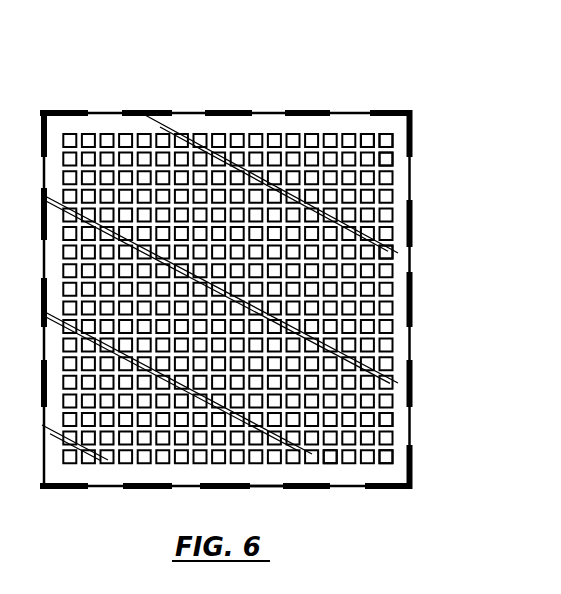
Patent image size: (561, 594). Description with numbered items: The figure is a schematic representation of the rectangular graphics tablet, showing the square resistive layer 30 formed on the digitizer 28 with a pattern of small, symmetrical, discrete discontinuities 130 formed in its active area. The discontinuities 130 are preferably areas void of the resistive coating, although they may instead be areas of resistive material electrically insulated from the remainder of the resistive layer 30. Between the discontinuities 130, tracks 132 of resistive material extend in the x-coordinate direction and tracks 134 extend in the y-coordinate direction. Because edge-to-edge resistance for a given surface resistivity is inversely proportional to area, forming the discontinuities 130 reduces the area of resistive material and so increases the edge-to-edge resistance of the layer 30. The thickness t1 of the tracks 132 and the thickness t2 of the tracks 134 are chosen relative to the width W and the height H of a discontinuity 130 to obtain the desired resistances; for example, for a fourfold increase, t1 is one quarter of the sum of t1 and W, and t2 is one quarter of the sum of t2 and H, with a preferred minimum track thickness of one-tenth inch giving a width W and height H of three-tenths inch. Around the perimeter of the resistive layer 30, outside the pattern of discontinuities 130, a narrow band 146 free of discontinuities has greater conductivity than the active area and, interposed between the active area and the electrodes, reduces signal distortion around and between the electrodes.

The digitizer 28 is at (263, 98).
The resistive layer 30 is at (340, 113).
The discontinuities 130 is at (386, 140).
The tracks 132 is at (387, 259).
The tracks 134 is at (117, 464).
The narrow band 146 is at (108, 122).
The height of a discontinuity H is at (382, 134).
The width of a discontinuity W is at (392, 144).
The thickness of tracks in the x-coordinate direction t1 is at (388, 447).
The thickness of tracks in the y-coordinate direction t2 is at (263, 467).